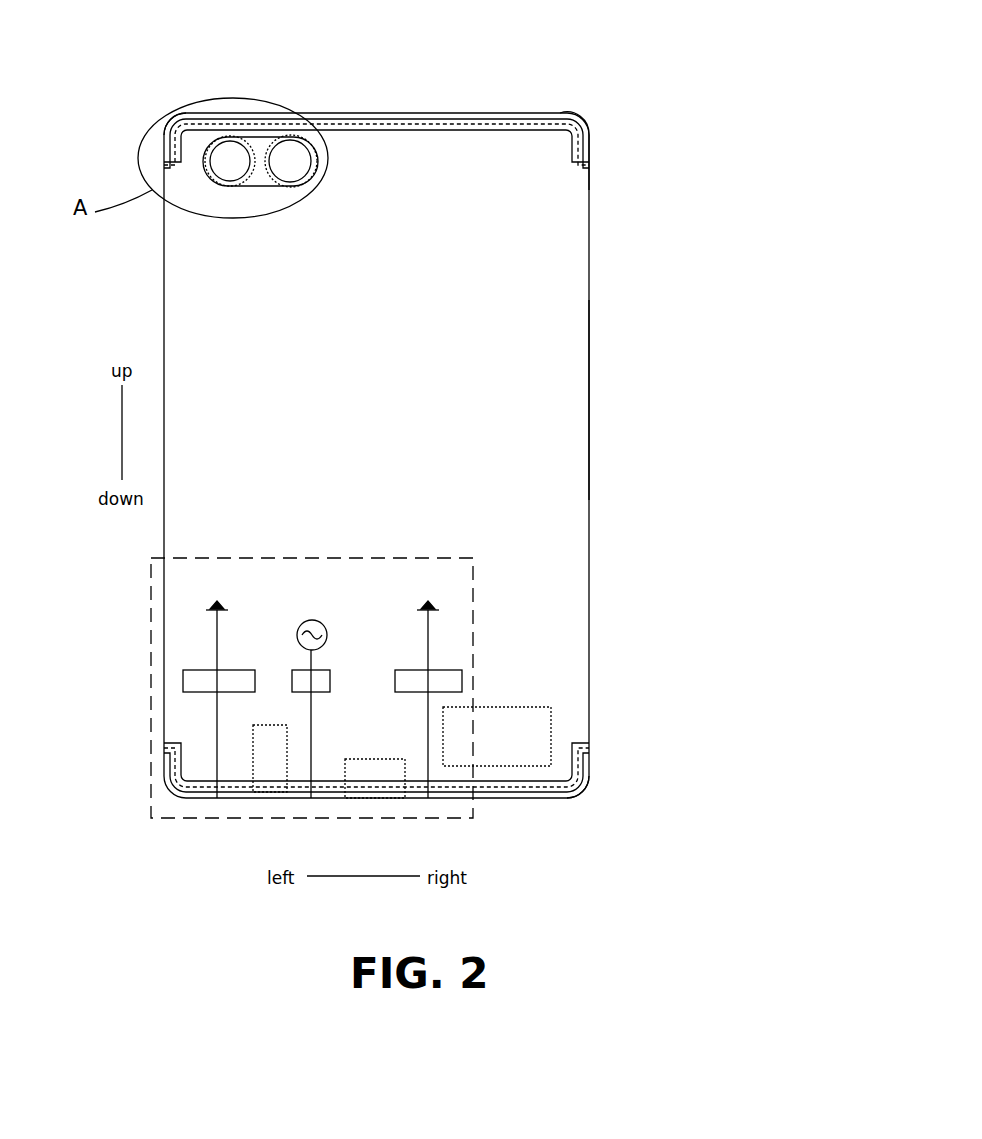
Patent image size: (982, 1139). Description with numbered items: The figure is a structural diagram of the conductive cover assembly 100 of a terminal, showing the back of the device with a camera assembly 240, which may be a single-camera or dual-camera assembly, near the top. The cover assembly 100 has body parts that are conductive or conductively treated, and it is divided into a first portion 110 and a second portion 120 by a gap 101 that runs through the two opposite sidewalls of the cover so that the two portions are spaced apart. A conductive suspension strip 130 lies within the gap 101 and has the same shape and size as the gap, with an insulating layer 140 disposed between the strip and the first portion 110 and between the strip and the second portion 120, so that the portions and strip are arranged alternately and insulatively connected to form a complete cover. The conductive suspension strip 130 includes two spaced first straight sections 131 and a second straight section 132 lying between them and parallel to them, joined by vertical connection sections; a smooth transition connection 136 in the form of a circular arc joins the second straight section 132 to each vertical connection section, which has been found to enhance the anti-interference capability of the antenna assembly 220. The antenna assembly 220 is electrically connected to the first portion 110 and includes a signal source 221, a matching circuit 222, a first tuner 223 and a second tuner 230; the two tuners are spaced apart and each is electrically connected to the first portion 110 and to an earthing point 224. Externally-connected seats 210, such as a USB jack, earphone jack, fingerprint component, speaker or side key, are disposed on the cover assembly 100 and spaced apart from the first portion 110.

The conductive cover assembly 100 is at (137, 107).
The first portion 110 is at (418, 116).
The second portion 120 is at (524, 410).
The conductive suspension strip 130 is at (180, 767).
The first straight section 131 is at (584, 168).
The second straight section 132 is at (503, 126).
The smooth transition connection 136 is at (568, 128).
The insulating layer 140 is at (208, 127).
The gap 101 is at (585, 795).
The externally-connected seat 210 is at (510, 720).
The antenna assembly 220 is at (151, 712).
The signal source 221 is at (313, 620).
The matching circuit 222 is at (323, 670).
The first tuner 223 is at (200, 669).
The earthing point 224 is at (216, 604).
The second tuner 230 is at (438, 671).
The camera assembly 240 is at (258, 176).